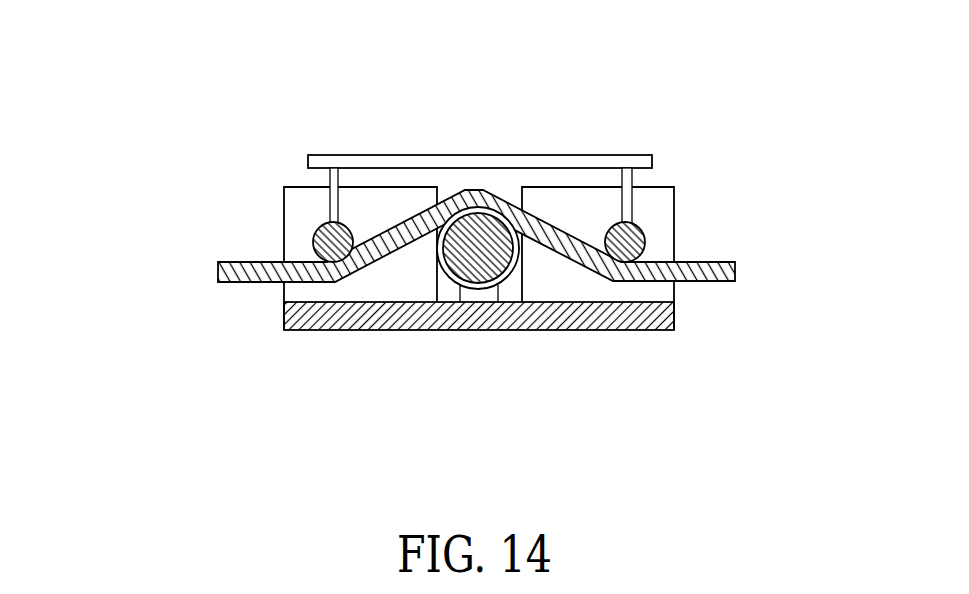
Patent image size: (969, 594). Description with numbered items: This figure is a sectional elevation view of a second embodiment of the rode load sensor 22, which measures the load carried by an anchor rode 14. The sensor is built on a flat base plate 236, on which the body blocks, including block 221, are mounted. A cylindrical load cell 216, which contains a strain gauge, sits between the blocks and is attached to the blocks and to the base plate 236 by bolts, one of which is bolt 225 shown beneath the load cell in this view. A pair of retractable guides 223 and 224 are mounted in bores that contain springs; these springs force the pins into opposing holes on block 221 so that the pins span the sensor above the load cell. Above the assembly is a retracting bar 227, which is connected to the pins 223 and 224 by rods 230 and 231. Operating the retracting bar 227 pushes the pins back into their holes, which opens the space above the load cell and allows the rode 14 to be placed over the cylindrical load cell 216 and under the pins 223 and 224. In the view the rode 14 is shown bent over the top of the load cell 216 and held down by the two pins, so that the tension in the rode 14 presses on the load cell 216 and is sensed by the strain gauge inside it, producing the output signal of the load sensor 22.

The rode 14 is at (680, 281).
The rode load sensor 22 is at (463, 291).
The cylindrical load cell 216 is at (522, 268).
The body block 221 is at (390, 280).
The retractable guide 223 is at (643, 238).
The retractable guide 224 is at (323, 227).
The bolt 225 is at (480, 293).
The retracting bar 227 is at (398, 160).
The rod 230 is at (335, 175).
The rod 231 is at (630, 173).
The base plate 236 is at (407, 318).